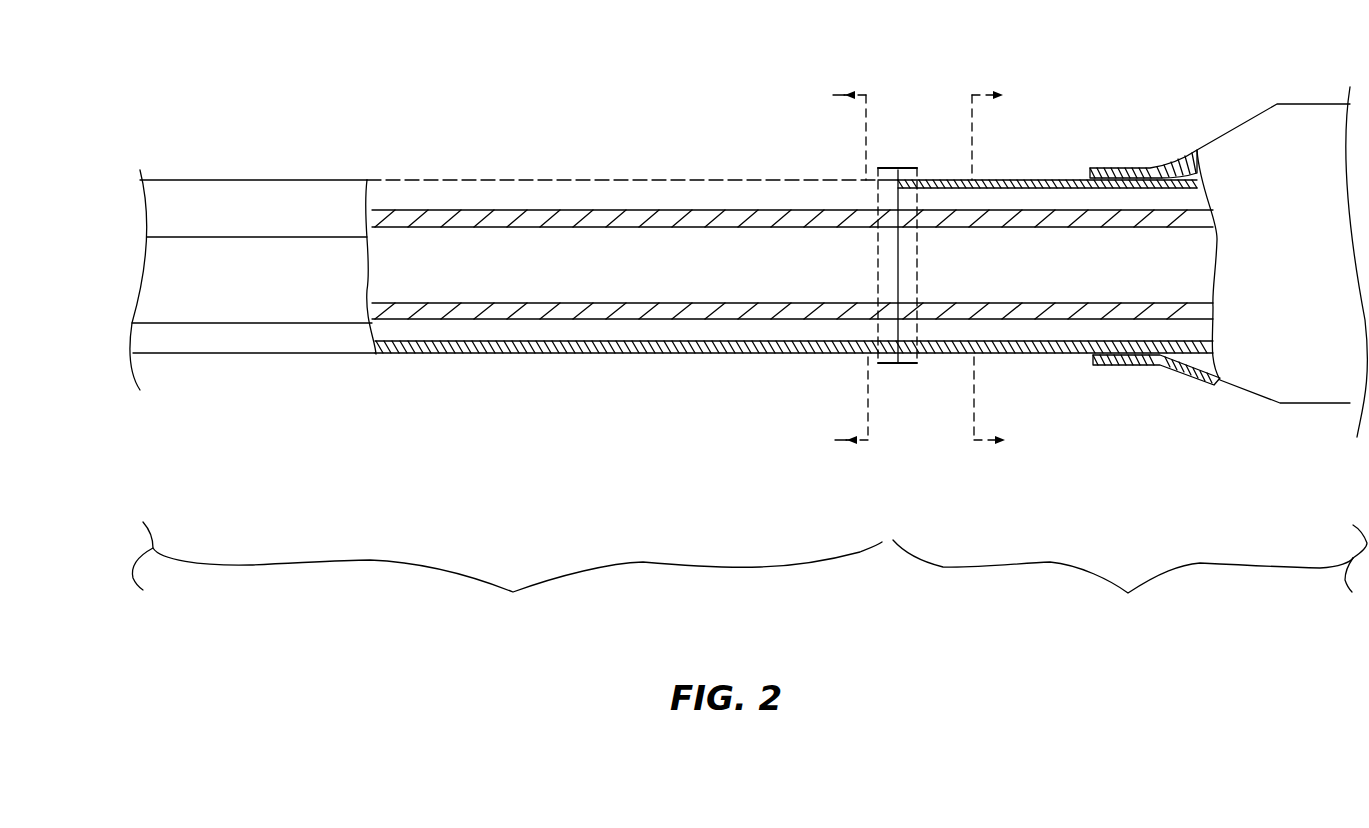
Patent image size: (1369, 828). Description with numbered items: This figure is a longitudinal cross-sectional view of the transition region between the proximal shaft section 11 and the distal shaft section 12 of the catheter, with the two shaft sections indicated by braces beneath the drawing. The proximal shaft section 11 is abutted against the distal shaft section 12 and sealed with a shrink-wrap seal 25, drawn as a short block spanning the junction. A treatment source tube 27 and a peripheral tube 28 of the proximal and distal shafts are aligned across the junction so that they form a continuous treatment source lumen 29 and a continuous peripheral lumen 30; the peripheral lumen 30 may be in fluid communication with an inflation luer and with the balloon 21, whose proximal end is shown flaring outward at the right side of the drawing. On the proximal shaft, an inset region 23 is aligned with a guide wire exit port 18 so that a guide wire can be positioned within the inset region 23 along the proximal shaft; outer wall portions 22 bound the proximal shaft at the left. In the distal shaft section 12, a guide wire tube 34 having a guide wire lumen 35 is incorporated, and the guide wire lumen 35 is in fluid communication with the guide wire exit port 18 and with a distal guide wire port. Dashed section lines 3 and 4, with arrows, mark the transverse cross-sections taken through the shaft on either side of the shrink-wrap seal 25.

The section line 3- 3 is at (840, 271).
The section line 4- 4 is at (1000, 272).
The proximal shaft section 11 is at (507, 577).
The distal shaft section 12 is at (1130, 579).
The guide wire exit port 18 is at (897, 202).
The balloon 21 is at (1297, 103).
The outer sheath 22 is at (220, 190).
The inset region 23 is at (263, 263).
The shrink-wrap seal 25 is at (905, 168).
The treatment source tube 27 is at (575, 210).
The peripheral tube 28 is at (417, 353).
The treatment source lumen 29 is at (641, 278).
The peripheral lumen 30 is at (522, 327).
The guide wire tube 34 is at (1015, 178).
The guide wire lumen 35 is at (1055, 202).